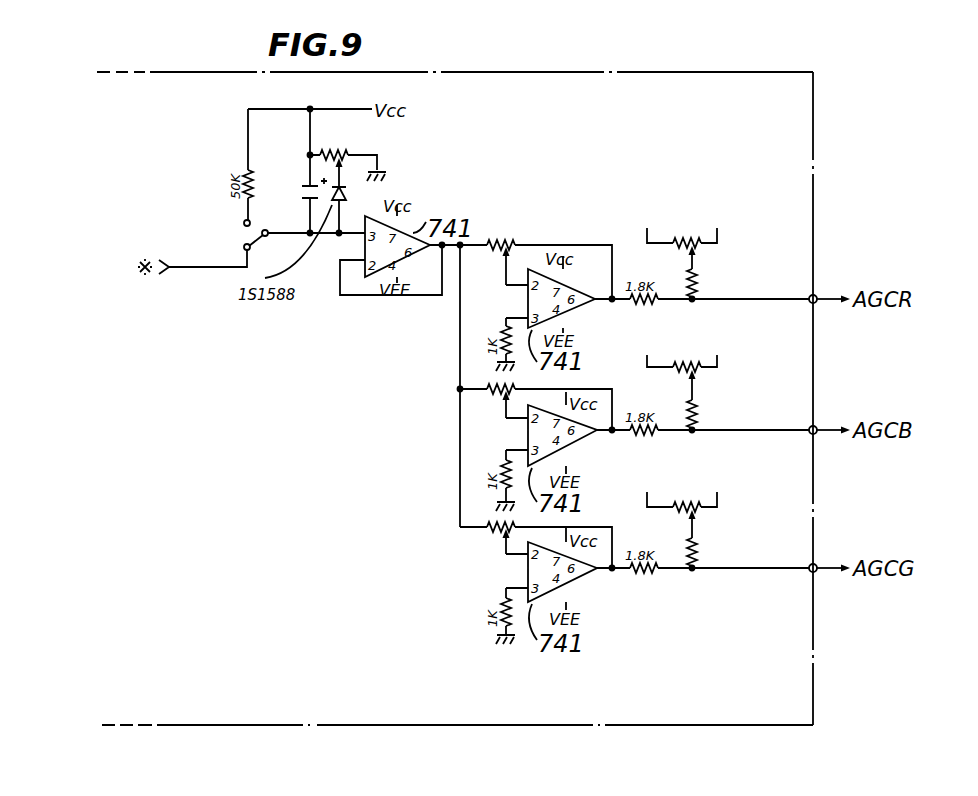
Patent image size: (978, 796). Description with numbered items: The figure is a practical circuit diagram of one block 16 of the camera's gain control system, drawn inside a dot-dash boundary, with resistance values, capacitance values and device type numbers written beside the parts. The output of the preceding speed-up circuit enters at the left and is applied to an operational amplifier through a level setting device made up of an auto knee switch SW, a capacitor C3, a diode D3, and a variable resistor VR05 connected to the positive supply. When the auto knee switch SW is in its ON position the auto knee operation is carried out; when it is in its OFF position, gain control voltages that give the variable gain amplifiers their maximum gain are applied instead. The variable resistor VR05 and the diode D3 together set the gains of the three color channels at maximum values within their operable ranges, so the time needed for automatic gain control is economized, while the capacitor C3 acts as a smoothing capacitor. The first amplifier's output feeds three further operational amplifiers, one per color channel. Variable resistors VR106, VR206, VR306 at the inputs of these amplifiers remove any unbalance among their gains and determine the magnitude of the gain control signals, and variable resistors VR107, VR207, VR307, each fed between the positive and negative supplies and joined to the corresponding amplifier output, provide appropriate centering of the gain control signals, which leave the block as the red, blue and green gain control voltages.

The gain control circuit block 16 is at (483, 72).
The auto knee switch SW is at (275, 237).
The capacitor C3 is at (307, 200).
The diode D3 is at (350, 195).
The variable resistor VR05 is at (352, 152).
The variable resistor VR106 is at (536, 262).
The variable resistor VR107 is at (697, 249).
The variable resistor VR206 is at (536, 399).
The variable resistor VR207 is at (697, 373).
The variable resistor VR306 is at (536, 537).
The variable resistor VR307 is at (697, 513).